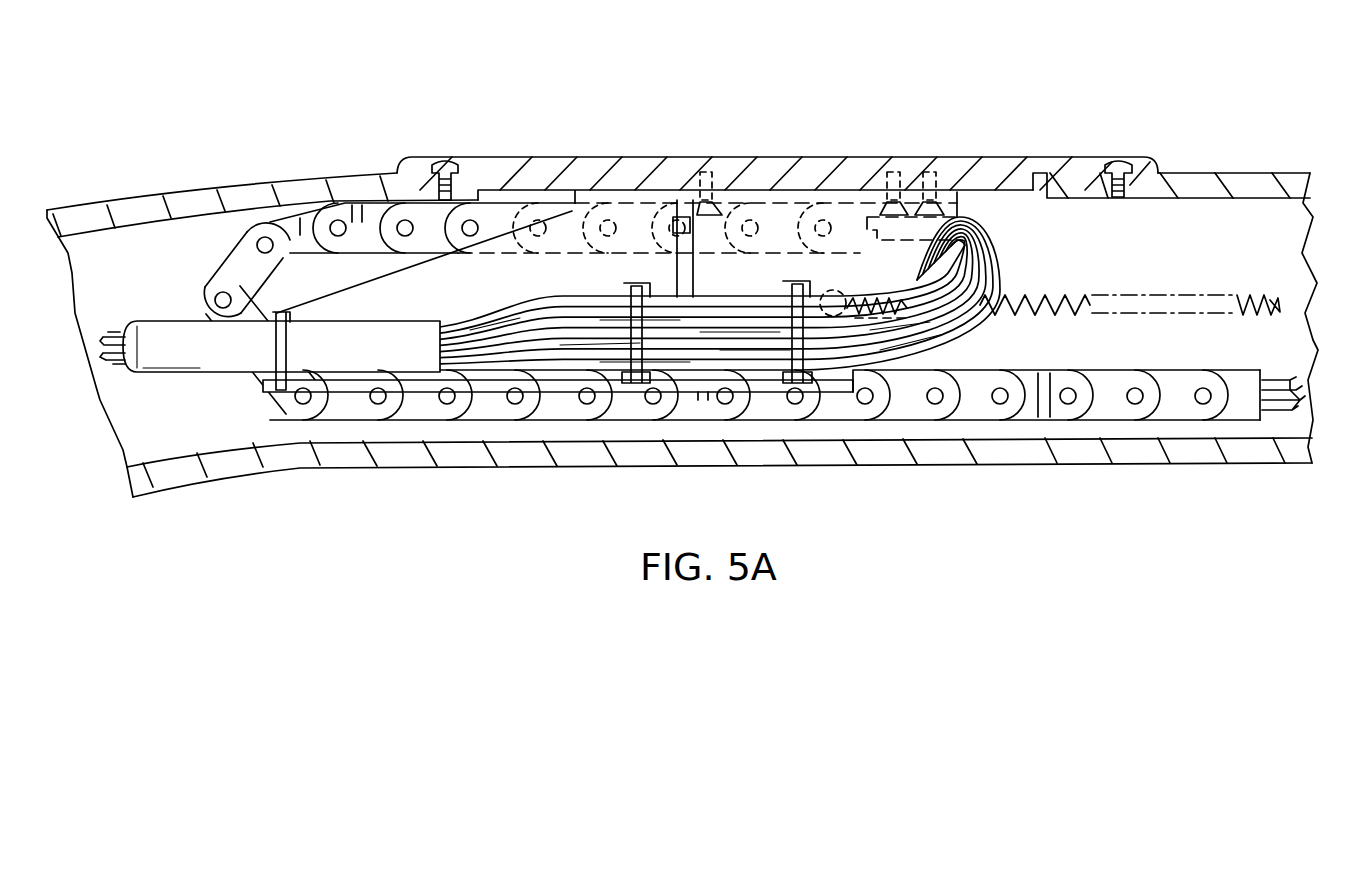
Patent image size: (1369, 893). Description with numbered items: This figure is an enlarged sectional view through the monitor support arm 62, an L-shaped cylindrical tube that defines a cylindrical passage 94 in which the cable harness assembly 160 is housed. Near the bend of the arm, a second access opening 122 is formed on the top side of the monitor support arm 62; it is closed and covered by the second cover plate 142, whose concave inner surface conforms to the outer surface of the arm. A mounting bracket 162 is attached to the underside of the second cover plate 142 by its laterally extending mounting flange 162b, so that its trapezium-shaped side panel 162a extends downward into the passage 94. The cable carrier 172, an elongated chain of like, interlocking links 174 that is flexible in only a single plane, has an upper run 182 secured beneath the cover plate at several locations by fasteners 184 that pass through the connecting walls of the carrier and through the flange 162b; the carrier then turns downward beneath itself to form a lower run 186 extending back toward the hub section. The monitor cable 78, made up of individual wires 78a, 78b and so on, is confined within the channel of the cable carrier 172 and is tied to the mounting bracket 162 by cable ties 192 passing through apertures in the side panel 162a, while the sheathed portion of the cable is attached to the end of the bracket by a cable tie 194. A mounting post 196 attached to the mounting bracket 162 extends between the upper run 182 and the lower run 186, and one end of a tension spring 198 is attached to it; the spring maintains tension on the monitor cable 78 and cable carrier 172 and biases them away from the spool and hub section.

The monitor support arm 62 is at (1256, 168).
The cylindrical passage 94 is at (1292, 232).
The second cover plate 142 is at (1010, 156).
The second access opening 122 is at (1046, 168).
The cable harness assembly 160 is at (301, 215).
The mounting bracket 162 is at (381, 272).
The side panel 162a is at (562, 272).
The mounting flange 162b is at (645, 200).
The upper run 182 is at (766, 210).
The fasteners 184 is at (707, 170).
The mounting post 196 is at (838, 290).
The monitor cable 78 is at (165, 338).
The wire 78a is at (125, 373).
The wire 78b is at (117, 334).
The cable tie 194 is at (284, 345).
The cable ties 192 is at (636, 377).
The cable carrier 172 is at (1037, 426).
The links 174 is at (1167, 416).
The lower run 186 is at (1243, 418).
The tension spring 198 is at (1068, 294).